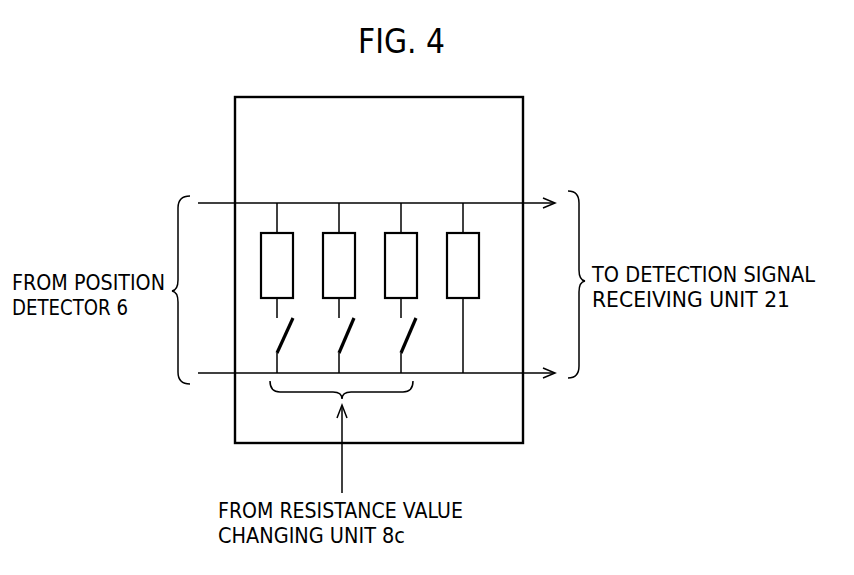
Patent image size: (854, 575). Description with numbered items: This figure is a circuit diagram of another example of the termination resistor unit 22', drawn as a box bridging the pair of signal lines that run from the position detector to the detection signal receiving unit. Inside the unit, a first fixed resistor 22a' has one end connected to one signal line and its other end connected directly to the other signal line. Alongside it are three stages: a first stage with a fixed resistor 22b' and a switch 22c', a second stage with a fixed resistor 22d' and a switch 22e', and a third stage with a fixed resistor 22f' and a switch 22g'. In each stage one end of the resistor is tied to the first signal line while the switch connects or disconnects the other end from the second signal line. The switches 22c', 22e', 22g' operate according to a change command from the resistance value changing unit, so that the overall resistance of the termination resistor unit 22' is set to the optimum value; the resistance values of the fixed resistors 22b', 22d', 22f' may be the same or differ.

The termination resistor unit 22' is at (412, 264).
The fixed resistor 22a' is at (479, 263).
The fixed resistor 22b' is at (417, 235).
The fixed resistor 22d' is at (354, 235).
The fixed resistor 22f' is at (288, 235).
The switch 22c' is at (456, 369).
The switch 22e' is at (384, 373).
The switch 22g' is at (299, 377).